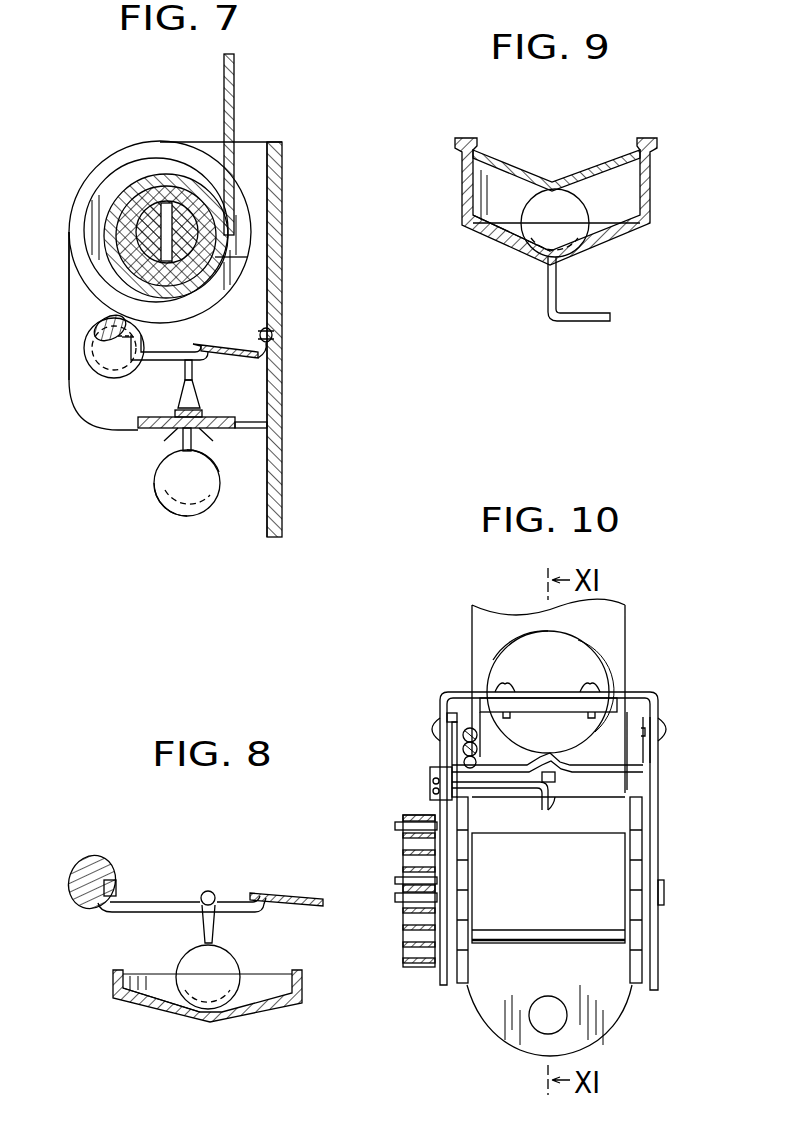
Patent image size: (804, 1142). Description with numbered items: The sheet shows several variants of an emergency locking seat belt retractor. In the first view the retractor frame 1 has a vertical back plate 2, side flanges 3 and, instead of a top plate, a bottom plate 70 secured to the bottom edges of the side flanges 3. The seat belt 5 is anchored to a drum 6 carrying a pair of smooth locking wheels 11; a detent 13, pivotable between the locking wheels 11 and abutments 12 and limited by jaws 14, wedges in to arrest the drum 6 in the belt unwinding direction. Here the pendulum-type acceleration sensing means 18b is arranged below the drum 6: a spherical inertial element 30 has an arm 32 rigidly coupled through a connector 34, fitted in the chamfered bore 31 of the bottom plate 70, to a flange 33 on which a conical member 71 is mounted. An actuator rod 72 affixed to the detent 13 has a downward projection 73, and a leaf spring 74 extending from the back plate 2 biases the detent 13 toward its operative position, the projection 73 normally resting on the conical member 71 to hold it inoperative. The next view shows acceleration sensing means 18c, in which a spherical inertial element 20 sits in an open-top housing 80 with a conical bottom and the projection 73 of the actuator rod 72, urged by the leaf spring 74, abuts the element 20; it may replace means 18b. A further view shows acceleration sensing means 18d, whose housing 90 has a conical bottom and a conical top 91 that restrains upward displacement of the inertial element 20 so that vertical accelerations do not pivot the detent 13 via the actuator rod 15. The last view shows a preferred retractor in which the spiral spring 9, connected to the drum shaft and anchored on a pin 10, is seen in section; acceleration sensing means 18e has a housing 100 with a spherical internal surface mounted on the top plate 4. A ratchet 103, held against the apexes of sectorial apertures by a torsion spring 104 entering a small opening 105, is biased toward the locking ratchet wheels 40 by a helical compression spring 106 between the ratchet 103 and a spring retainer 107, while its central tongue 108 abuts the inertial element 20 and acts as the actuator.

In FIG. 7, the frame 1 is at (268, 140).
In FIG. 10, the frame 1 is at (670, 732).
In FIG. 7, the back plate 2 is at (280, 214).
In FIG. 10, the back plate 2 is at (590, 1025).
In FIG. 7, the side flanges 3 is at (252, 168).
In FIG. 10, the side flanges 3 is at (658, 928).
In FIG. 10, the top plate 4 is at (447, 694).
In FIG. 7, the seat belt 5 is at (235, 100).
In FIG. 10, the seat belt 5 is at (483, 623).
In FIG. 7, the drum 6 is at (148, 222).
In FIG. 10, the drum 6 is at (474, 886).
In FIG. 10, the spiral spring 9 is at (403, 858).
In FIG. 10, the pin 10 is at (398, 822).
In FIG. 7, the locking wheels 11 is at (247, 257).
In FIG. 7, the abutments 12 is at (100, 352).
In FIG. 7, the detent 13 is at (102, 322).
In FIG. 8, the detent 13 is at (97, 860).
In FIG. 7, the jaws 14 is at (118, 336).
In FIG. 9, the actuator rod 15 is at (583, 322).
In FIG. 7, the pendulum-type acceleration sensing means 18b is at (152, 508).
In FIG. 8, the acceleration sensing means 18c is at (150, 1021).
In FIG. 9, the acceleration sensing means 18d is at (500, 251).
In FIG. 10, the acceleration sensing means 18e is at (493, 655).
In FIG. 9, the spherical inertial element 20 is at (578, 207).
In FIG. 8, the spherical inertial element 20 is at (229, 958).
In FIG. 10, the spherical inertial element 20 is at (527, 750).
In FIG. 7, the spherical inertial element 30 is at (207, 511).
In FIG. 7, the bore 31 is at (196, 432).
In FIG. 7, the arm 32 is at (214, 462).
In FIG. 7, the flange 33 is at (205, 413).
In FIG. 7, the connector 34 is at (176, 423).
In FIG. 10, the locking ratchet wheels 40 is at (468, 962).
In FIG. 7, the bottom plate 70 is at (267, 423).
In FIG. 7, the conical member 71 is at (194, 398).
In FIG. 7, the actuator rod 72 is at (185, 362).
In FIG. 8, the actuator rod 72 is at (150, 902).
In FIG. 7, the downward projection 73 is at (186, 378).
In FIG. 8, the downward projection 73 is at (204, 930).
In FIG. 7, the leaf spring 74 is at (250, 354).
In FIG. 8, the leaf spring 74 is at (287, 893).
In FIG. 8, the housing 80 is at (297, 989).
In FIG. 9, the housing 90 is at (617, 248).
In FIG. 9, the conical top 91 is at (583, 168).
In FIG. 10, the housing 100 is at (592, 650).
In FIG. 10, the ratchet 103 is at (628, 792).
In FIG. 10, the torsion spring 104 is at (530, 798).
In FIG. 10, the small opening 105 is at (548, 797).
In FIG. 10, the helical compression spring 106 is at (463, 746).
In FIG. 10, the spring retainer 107 is at (447, 716).
In FIG. 10, the tongue 108 is at (560, 777).